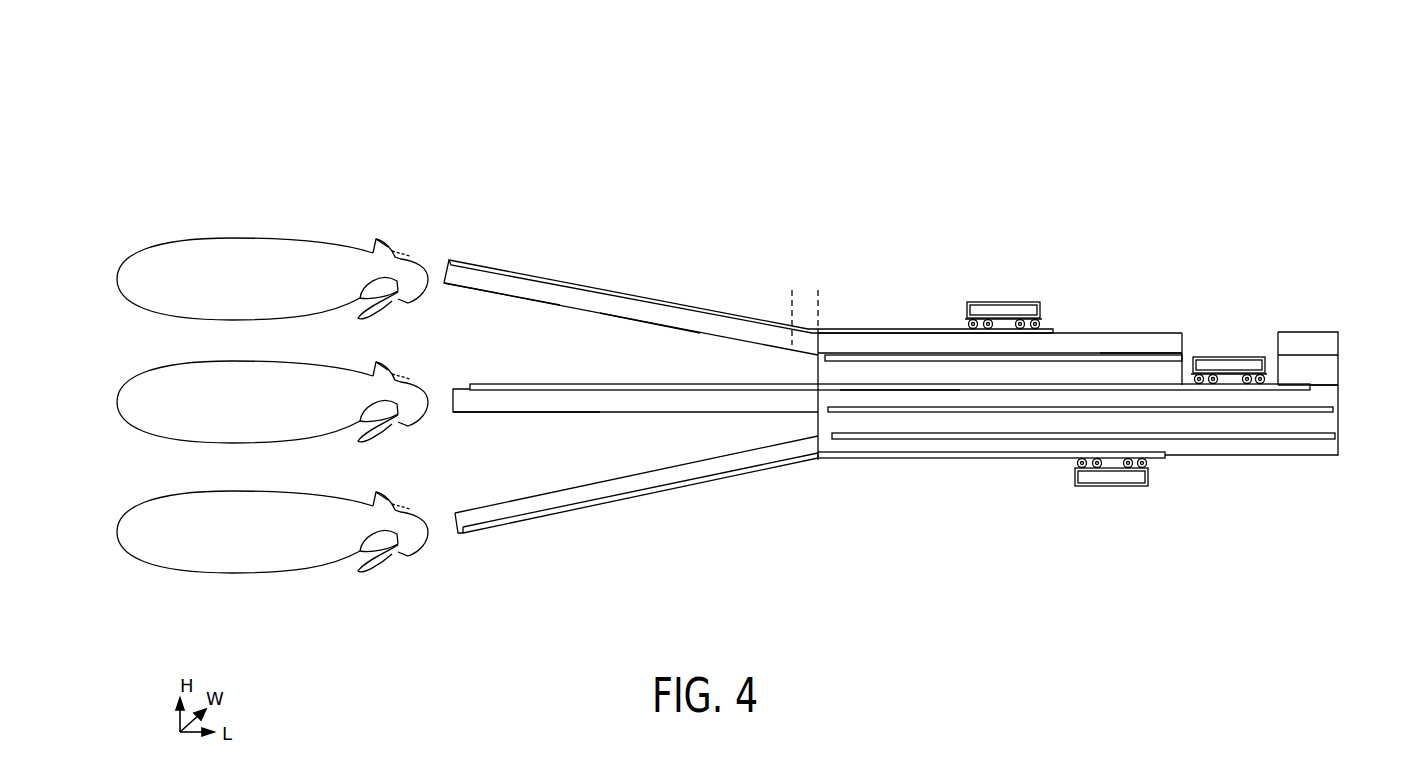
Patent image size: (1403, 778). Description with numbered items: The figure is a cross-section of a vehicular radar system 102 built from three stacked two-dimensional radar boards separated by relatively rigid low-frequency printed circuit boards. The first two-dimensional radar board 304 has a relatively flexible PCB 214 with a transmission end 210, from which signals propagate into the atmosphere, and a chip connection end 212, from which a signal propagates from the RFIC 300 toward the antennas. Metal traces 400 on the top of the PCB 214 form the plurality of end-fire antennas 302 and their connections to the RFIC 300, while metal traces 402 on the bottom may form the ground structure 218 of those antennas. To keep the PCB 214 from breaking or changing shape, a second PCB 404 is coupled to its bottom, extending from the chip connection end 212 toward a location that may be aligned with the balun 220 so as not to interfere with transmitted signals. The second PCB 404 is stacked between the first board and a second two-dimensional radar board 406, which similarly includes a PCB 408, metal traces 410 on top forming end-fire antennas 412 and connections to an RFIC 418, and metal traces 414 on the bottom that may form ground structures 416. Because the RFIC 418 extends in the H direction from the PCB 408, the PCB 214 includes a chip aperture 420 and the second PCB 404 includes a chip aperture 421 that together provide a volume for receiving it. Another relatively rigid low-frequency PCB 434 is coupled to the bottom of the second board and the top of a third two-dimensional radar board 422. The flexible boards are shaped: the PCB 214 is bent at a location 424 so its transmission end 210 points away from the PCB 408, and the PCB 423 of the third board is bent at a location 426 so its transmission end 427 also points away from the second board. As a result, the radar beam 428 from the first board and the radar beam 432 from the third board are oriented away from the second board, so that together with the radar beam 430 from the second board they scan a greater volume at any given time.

The vehicular radar system 102 is at (246, 124).
The transmission end 210 is at (447, 262).
The chip connection end 212 is at (1327, 337).
The PCB 214 is at (487, 287).
The ground structure 218 is at (1155, 352).
The balun 220 is at (812, 322).
The RFIC 300 is at (1010, 300).
The end-fire antennas 302 is at (537, 272).
The two-dimensional radar board 304 is at (663, 315).
The metal traces 400 is at (597, 287).
The metal traces 402 is at (940, 352).
The second PCB 404 is at (1330, 365).
The second two-dimensional radar board 406 is at (1330, 395).
The PCB 408 is at (487, 407).
The metal traces 410 is at (518, 383).
The end-fire antennas 412 is at (658, 383).
The metal traces 414 is at (867, 390).
The ground structures 416 is at (917, 390).
The RFIC 418 is at (1215, 357).
The chip aperture 420 is at (1183, 335).
The chip aperture 421 is at (1273, 367).
The third two-dimensional radar board 422 is at (1318, 450).
The PCB 423 is at (653, 480).
The bend location 424 is at (820, 329).
The bend location 426 is at (817, 458).
The transmission end 427 is at (455, 523).
The radar beam 428 is at (117, 282).
The radar beam 430 is at (117, 405).
The radar beam 432 is at (117, 535).
The low-frequency PCB 434 is at (1330, 420).